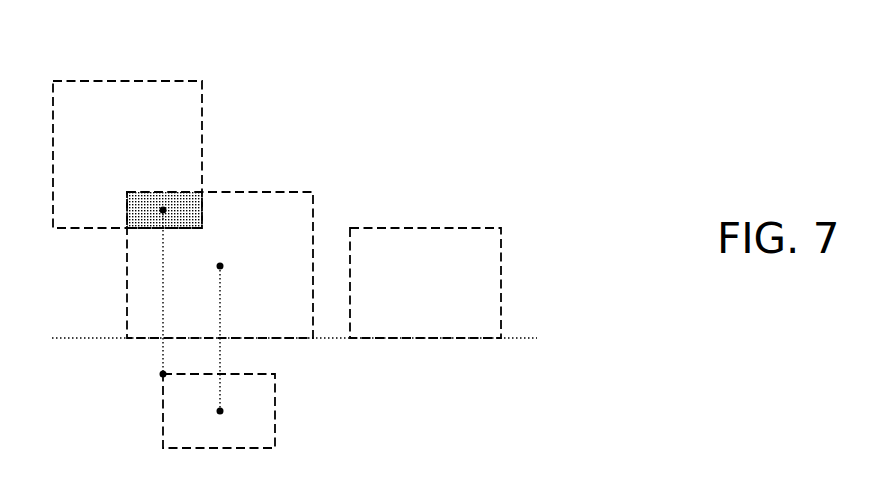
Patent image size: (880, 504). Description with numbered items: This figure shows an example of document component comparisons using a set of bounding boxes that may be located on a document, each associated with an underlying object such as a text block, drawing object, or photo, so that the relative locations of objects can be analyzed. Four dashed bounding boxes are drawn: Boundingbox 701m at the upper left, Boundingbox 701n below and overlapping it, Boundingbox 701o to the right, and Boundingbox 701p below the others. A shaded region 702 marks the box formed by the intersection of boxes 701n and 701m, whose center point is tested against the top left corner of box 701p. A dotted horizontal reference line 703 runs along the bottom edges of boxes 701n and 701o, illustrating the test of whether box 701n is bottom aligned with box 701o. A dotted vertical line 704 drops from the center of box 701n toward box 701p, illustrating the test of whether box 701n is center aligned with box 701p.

The Boundingbox 701m is at (106, 80).
The Boundingbox 701n is at (253, 192).
The Boundingbox 701o is at (437, 228).
The Boundingbox 701p is at (275, 392).
The overlap region 702 is at (127, 212).
The reference line 703 is at (108, 338).
The displacement line 704 is at (220, 355).